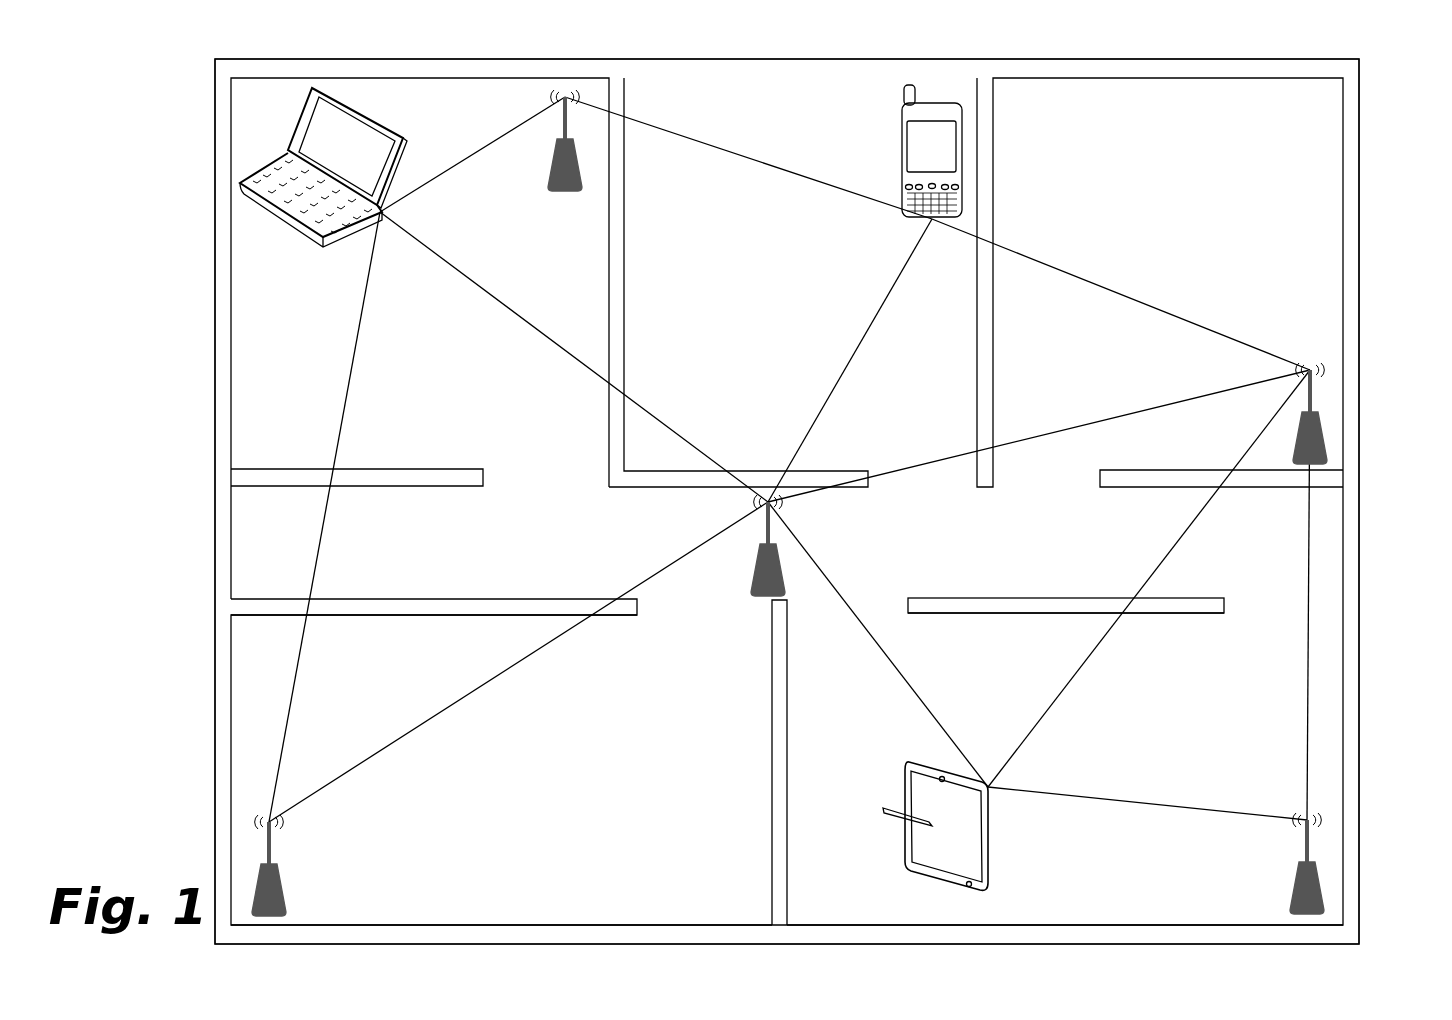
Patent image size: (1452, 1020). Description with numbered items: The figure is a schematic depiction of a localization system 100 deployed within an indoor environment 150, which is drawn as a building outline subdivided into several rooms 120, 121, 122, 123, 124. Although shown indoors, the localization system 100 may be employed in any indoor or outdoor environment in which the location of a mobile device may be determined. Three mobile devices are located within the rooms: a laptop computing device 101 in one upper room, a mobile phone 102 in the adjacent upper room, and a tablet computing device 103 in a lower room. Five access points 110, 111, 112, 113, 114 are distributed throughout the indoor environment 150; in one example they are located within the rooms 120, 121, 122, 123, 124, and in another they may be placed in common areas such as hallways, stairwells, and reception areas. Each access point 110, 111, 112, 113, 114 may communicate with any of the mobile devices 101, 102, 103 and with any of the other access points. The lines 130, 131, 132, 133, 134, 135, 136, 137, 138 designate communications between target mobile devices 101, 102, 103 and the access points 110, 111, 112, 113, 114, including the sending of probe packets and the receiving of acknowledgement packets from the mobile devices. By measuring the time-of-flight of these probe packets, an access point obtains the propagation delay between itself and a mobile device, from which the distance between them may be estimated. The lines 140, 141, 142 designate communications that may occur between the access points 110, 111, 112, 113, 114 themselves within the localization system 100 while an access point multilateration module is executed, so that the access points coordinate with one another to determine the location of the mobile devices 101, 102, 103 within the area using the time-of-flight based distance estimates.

The localization system 100 is at (147, 281).
The laptop computing device 101 is at (287, 210).
The mobile phone 102 is at (932, 137).
The tablet computing device 103 is at (942, 840).
The access point 110 is at (283, 898).
The access point 111 is at (573, 190).
The access point 112 is at (767, 580).
The access point 113 is at (1328, 440).
The access point 114 is at (1300, 903).
The room 120 is at (398, 278).
The room 121 is at (780, 278).
The room 122 is at (1145, 278).
The room 123 is at (1045, 783).
The room 124 is at (480, 783).
The line 130 is at (325, 534).
The line 131 is at (565, 352).
The line 132 is at (488, 145).
The line 133 is at (690, 140).
The line 134 is at (856, 350).
The line 135 is at (1020, 256).
The line 136 is at (1182, 530).
The line 137 is at (1097, 798).
The line 138 is at (858, 622).
The line 140 is at (475, 690).
The line 141 is at (1070, 423).
The line 142 is at (1307, 650).
The indoor environment 150 is at (222, 480).